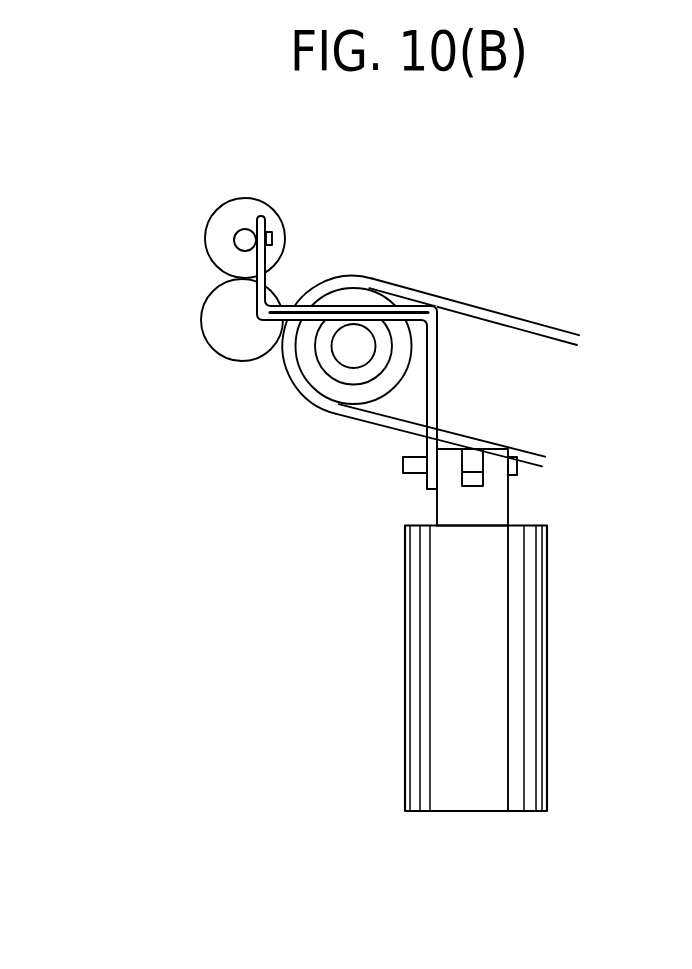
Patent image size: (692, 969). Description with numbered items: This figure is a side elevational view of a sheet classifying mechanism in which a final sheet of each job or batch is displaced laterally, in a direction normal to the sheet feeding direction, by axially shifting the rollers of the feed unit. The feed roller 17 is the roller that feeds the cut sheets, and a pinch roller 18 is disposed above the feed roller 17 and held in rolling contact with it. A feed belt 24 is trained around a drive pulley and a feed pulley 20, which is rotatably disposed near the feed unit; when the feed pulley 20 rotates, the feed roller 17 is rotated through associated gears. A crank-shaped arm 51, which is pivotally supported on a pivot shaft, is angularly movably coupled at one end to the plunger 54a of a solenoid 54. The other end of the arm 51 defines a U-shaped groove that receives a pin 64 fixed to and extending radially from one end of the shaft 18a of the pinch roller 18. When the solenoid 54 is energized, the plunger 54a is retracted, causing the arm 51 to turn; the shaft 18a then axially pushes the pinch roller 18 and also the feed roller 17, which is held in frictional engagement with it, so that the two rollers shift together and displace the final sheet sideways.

The feed roller 17 is at (227, 345).
The pinch roller 18 is at (219, 223).
The shaft 18a is at (250, 244).
The feed pulley 20 is at (325, 389).
The feed belt 24 is at (523, 325).
The crank-shaped arm 51 is at (432, 380).
The solenoid 54 is at (550, 654).
The plunger 54a is at (448, 505).
The pin 64 is at (250, 244).